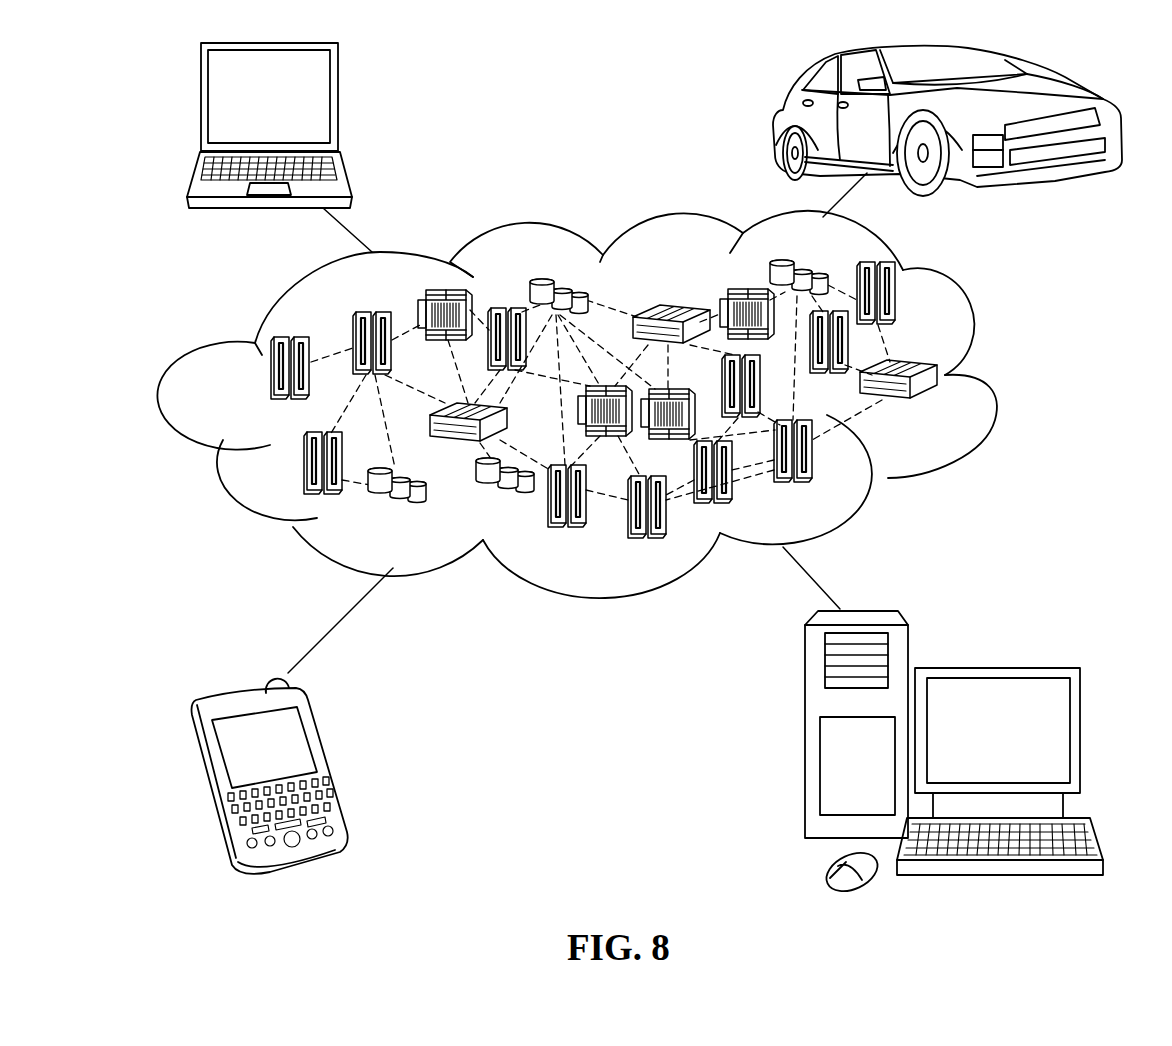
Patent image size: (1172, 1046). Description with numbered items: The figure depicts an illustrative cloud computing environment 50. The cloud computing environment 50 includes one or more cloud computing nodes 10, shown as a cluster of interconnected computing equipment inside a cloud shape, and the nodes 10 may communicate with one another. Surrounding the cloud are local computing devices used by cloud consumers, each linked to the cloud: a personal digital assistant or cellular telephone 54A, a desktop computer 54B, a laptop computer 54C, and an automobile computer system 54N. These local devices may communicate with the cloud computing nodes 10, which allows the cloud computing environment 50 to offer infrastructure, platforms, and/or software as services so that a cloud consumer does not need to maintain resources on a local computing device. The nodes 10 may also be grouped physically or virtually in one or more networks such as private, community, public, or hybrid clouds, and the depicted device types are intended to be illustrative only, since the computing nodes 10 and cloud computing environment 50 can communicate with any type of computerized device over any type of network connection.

The cloud computing node 10 is at (935, 407).
The cloud computing environment 50 is at (995, 378).
The personal digital assistant (PDA) or cellular telephone 54A is at (327, 762).
The desktop computer 54B is at (997, 668).
The laptop computer 54C is at (339, 104).
The automobile computer system 54N is at (775, 122).